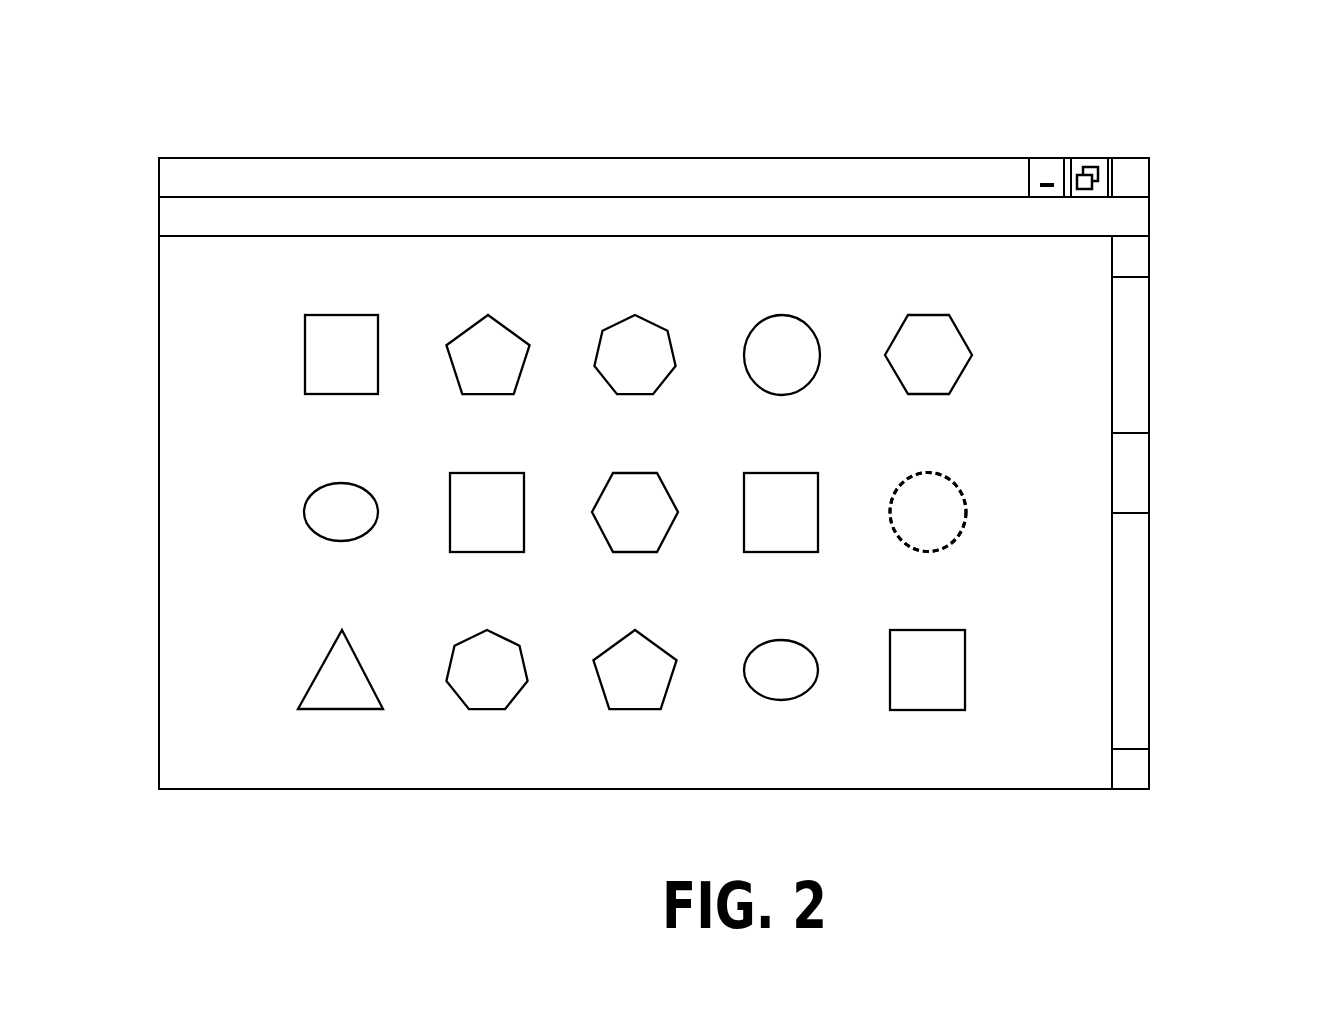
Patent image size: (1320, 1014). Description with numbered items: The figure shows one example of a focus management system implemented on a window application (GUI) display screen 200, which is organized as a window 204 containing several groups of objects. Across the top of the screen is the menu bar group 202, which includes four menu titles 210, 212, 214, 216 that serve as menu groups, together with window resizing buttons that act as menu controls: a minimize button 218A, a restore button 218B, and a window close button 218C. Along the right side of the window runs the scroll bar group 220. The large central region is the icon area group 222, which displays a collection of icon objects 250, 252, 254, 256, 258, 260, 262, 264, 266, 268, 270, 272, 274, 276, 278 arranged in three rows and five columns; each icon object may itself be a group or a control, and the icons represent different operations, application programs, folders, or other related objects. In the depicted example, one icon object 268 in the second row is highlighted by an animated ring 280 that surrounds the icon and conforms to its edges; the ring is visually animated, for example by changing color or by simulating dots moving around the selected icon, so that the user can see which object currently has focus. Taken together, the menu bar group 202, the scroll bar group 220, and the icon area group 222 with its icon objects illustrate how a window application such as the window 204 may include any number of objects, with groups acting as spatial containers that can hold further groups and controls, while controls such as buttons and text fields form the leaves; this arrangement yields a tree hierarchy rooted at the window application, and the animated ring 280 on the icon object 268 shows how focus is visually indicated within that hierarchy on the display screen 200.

The window application (GUI) display screen 200 is at (638, 428).
The menu bar group 202 is at (654, 143).
The window 204 is at (635, 399).
The menu title 210 is at (313, 141).
The menu title 212 is at (458, 141).
The menu title 214 is at (603, 141).
The menu title 216 is at (753, 141).
The minimize button 218A is at (1103, 123).
The restore button 218B is at (1142, 143).
The window close button 218C is at (1181, 163).
The scroll bar group 220 is at (1202, 513).
The icon area group 222 is at (1172, 512).
The icon object 250 is at (341, 354).
The icon object 252 is at (487, 354).
The icon object 254 is at (634, 354).
The icon object 256 is at (782, 355).
The icon object 258 is at (928, 354).
The icon object 260 is at (341, 512).
The icon object 262 is at (487, 512).
The icon object 264 is at (635, 512).
The icon object 266 is at (781, 512).
The icon object 268 is at (928, 512).
The icon object 270 is at (340, 669).
The icon object 272 is at (486, 669).
The icon object 274 is at (634, 669).
The icon object 276 is at (781, 670).
The icon object 278 is at (927, 670).
The animated ring 280 is at (976, 496).